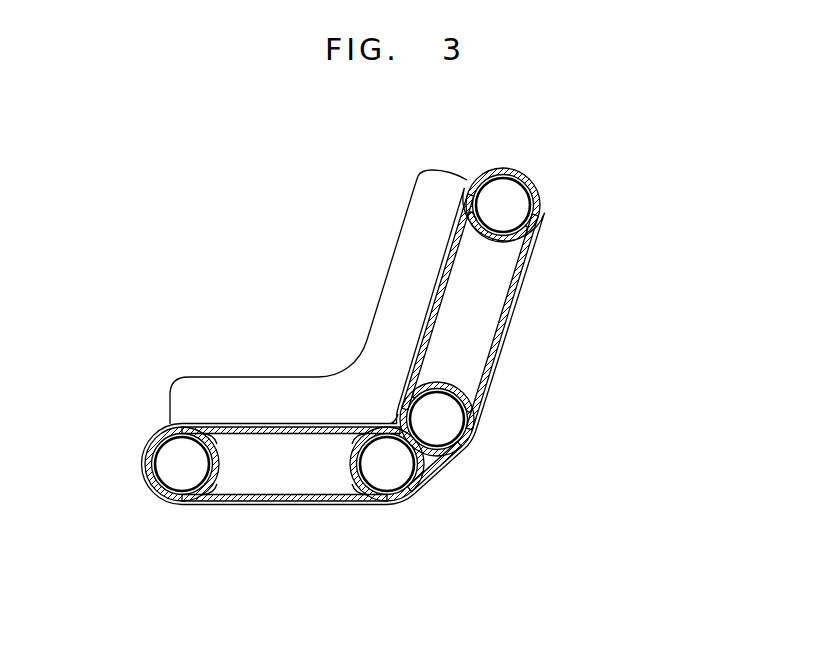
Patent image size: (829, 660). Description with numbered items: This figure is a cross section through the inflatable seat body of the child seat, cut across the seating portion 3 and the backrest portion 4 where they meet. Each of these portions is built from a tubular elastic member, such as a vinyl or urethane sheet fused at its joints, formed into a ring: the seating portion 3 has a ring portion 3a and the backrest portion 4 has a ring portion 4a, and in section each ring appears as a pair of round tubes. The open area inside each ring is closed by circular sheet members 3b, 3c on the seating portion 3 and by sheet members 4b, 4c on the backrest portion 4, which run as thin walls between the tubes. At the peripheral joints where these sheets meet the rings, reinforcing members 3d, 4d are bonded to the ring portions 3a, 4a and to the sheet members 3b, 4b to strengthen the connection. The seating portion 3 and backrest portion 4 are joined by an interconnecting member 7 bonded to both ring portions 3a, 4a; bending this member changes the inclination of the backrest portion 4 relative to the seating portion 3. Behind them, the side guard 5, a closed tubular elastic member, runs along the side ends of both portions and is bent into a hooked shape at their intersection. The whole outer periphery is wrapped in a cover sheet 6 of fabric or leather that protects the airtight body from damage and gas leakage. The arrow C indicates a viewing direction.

The seating portion 3 is at (268, 450).
The ring portion 3a is at (143, 463).
The sheet member 3b is at (283, 426).
The sheet member 3c is at (304, 507).
The reinforcing member 3d is at (350, 438).
The backrest portion 4 is at (480, 291).
The ring portion 4a is at (541, 191).
The sheet member 4b is at (446, 268).
The sheet member 4c is at (511, 323).
The reinforcing member 4d is at (430, 367).
The side guard 5 is at (383, 302).
The cover sheet 6 is at (529, 268).
The interconnecting member 7 is at (398, 426).
The direction indicator C is at (634, 334).